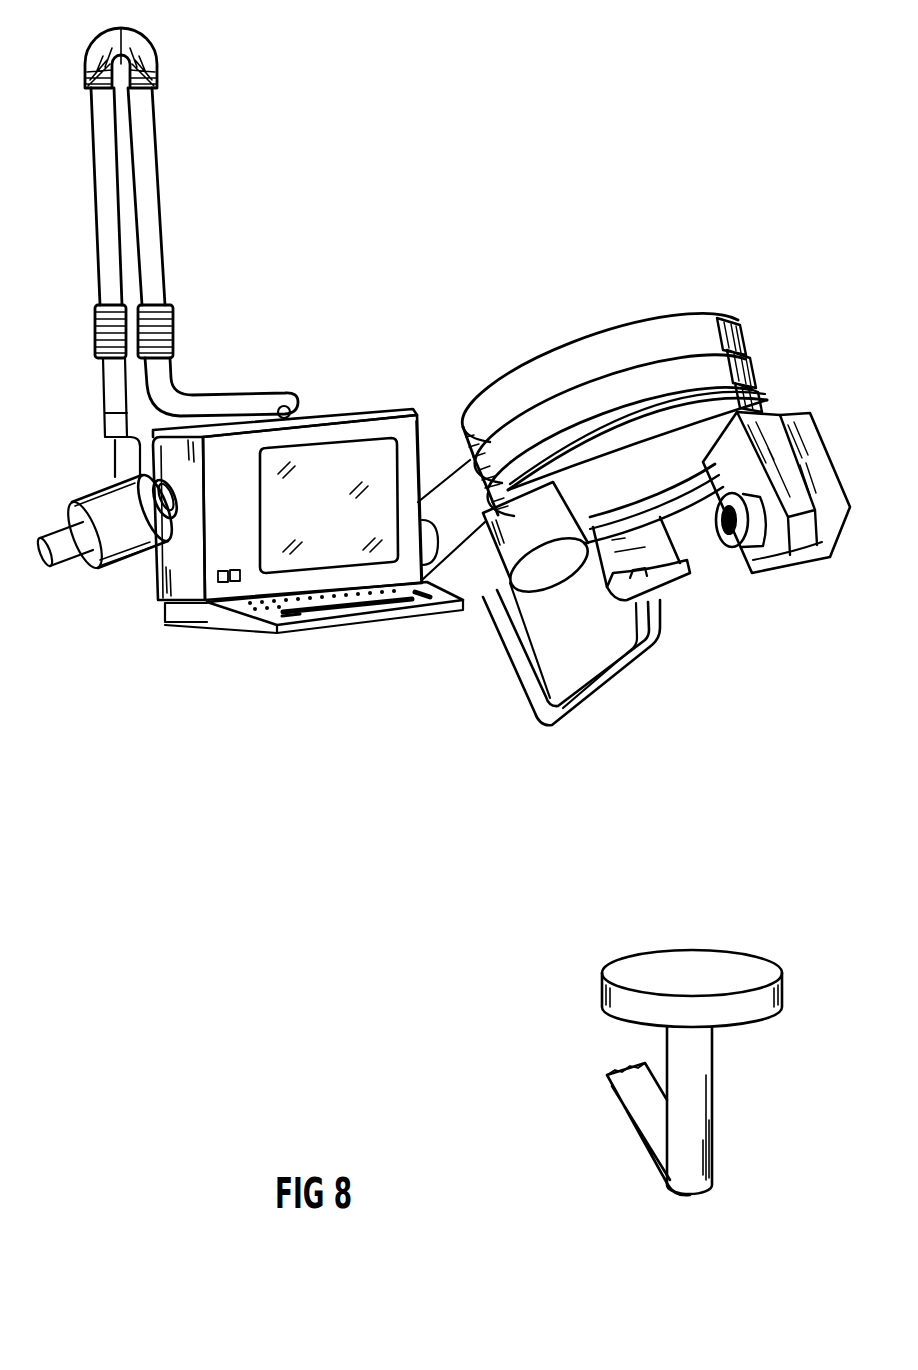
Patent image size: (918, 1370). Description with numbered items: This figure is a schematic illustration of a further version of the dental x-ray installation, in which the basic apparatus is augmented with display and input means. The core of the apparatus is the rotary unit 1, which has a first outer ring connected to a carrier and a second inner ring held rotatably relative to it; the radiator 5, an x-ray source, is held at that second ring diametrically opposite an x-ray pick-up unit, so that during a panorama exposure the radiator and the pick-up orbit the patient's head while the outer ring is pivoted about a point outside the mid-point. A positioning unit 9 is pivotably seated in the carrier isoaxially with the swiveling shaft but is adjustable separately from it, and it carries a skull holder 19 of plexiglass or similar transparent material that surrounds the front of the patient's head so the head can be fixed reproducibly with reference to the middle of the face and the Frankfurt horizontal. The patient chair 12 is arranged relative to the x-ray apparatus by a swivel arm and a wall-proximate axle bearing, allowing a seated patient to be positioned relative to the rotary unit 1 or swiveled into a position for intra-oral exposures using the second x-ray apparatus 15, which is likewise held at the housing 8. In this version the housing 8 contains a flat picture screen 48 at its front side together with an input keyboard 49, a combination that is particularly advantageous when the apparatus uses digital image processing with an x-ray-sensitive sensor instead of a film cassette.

The rotary unit 1 is at (652, 307).
The radiator 5 is at (820, 455).
The housing 8 is at (328, 410).
The positioning unit 9 is at (600, 688).
The patient chair 12 is at (713, 968).
The second x-ray apparatus 15 is at (85, 335).
The skull holder 19 is at (675, 585).
The flat picture screen 48 is at (358, 473).
The input keyboard 49 is at (302, 630).